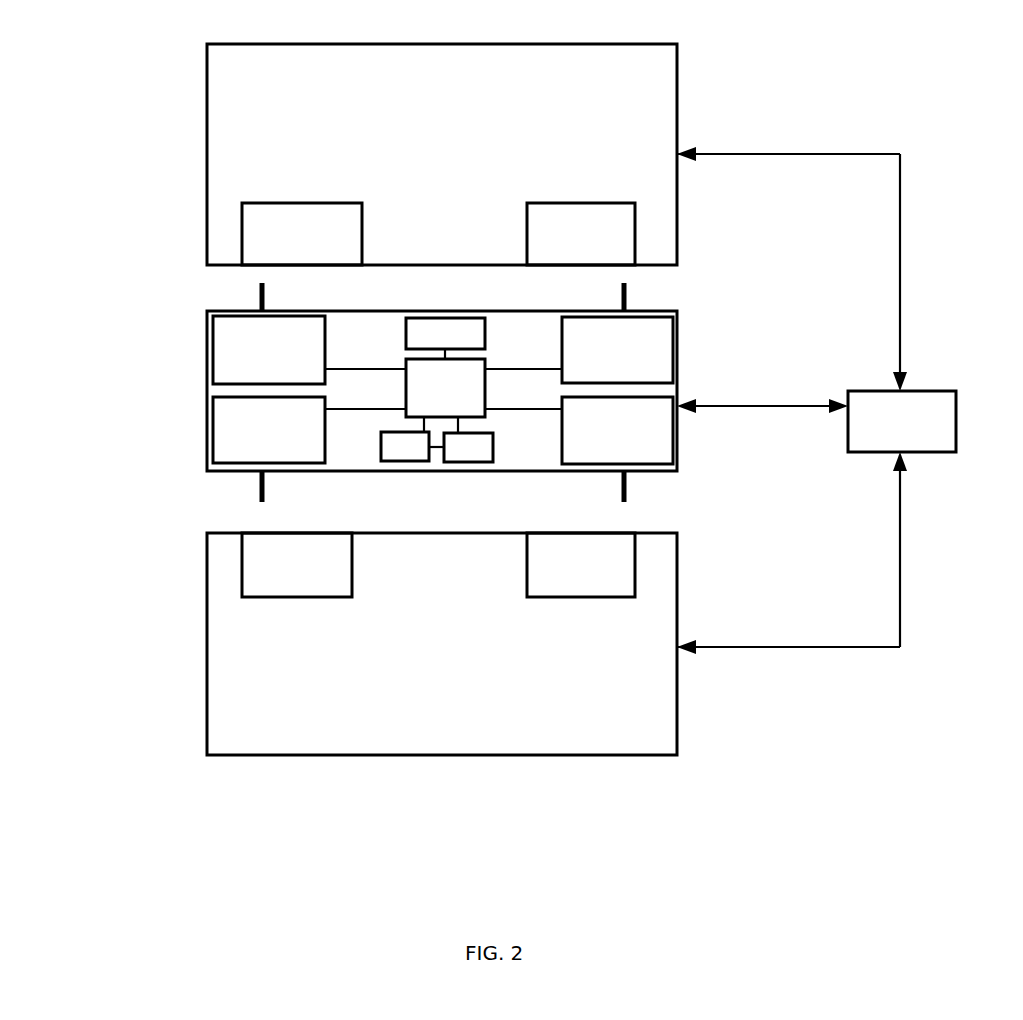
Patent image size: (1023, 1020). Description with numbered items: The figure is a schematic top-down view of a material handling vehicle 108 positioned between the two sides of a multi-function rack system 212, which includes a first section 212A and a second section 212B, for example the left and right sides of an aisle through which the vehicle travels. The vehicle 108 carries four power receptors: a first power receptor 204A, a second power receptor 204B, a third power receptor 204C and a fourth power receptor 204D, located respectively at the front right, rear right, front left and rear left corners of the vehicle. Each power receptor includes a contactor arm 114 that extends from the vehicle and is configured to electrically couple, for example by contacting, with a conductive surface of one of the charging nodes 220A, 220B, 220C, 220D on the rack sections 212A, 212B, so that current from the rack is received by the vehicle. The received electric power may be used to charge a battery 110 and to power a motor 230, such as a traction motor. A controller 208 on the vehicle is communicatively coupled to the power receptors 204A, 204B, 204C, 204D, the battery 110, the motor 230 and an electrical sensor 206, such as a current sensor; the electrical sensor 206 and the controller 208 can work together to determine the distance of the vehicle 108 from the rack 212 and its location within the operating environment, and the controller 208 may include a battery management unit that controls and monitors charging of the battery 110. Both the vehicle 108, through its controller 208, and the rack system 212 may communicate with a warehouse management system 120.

The material handling vehicle 108 is at (178, 405).
The battery 110 is at (488, 462).
The contactor arm 114 is at (260, 285).
The warehouse management system 120 is at (923, 391).
The first power receptor 204A is at (677, 454).
The second power receptor 204B is at (207, 448).
The third power receptor 204C is at (677, 380).
The fourth power receptor 204D is at (207, 381).
The electrical sensor 206 is at (418, 461).
The controller 208 is at (485, 417).
The multi-function rack system 212 is at (165, 248).
The first section 212A is at (207, 153).
The second section 212B is at (207, 667).
The charging node 220A is at (242, 592).
The charging node 220B is at (635, 573).
The charging node 220C is at (635, 239).
The charging node 220D is at (242, 211).
The motor 230 is at (455, 318).